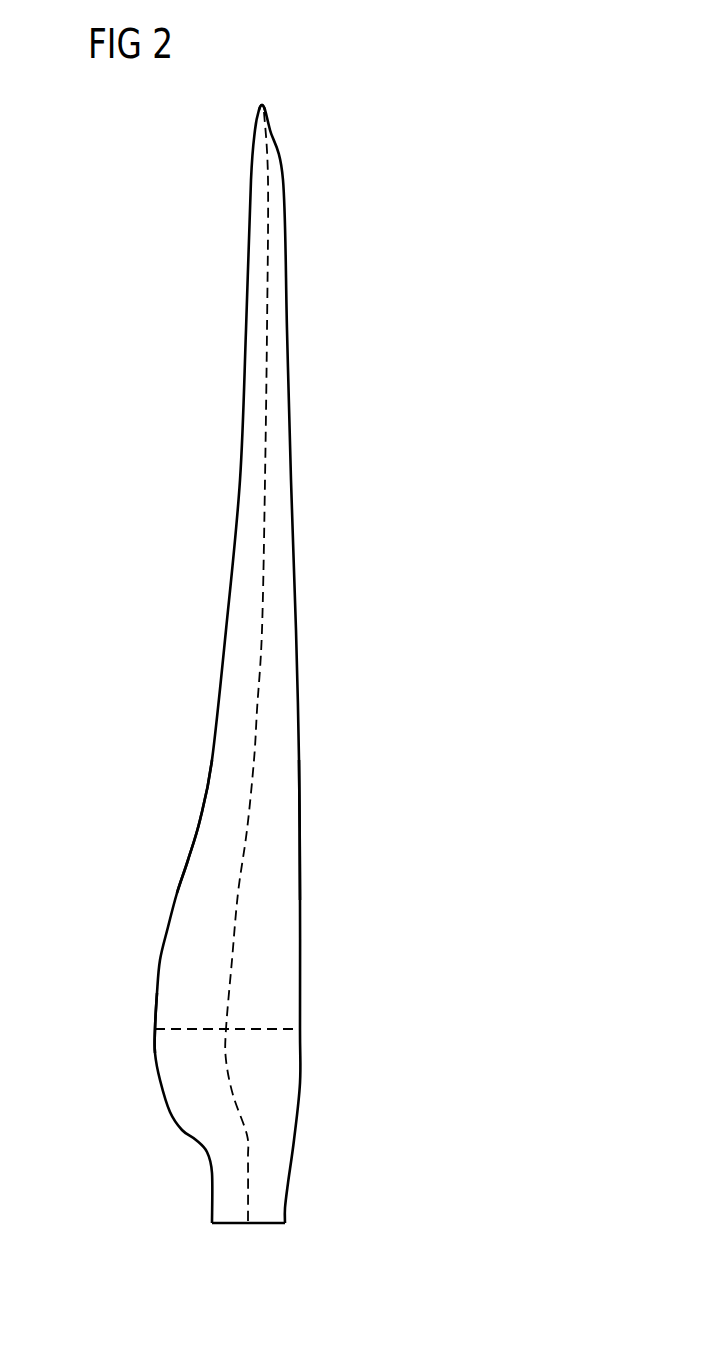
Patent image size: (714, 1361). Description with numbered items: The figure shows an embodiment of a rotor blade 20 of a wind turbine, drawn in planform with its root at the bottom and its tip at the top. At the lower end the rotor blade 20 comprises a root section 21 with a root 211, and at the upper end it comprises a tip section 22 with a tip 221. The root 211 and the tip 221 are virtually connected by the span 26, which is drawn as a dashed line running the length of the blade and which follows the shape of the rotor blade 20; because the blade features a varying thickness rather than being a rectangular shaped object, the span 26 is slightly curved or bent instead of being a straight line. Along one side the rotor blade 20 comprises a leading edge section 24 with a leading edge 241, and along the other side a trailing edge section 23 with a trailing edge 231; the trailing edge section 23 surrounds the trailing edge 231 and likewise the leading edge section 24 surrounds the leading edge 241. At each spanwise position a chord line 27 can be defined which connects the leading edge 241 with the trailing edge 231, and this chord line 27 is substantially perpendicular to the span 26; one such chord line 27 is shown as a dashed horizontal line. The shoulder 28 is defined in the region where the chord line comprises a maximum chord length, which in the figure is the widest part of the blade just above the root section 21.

The rotor blade 20 is at (386, 473).
The root section 21 is at (277, 1185).
The root 211 is at (237, 1224).
The tip section 22 is at (270, 142).
The tip 221 is at (262, 106).
The trailing edge section 23 is at (227, 734).
The trailing edge 231 is at (207, 786).
The leading edge section 24 is at (288, 768).
The leading edge 241 is at (302, 814).
The span 26 is at (257, 710).
The chord line 27 is at (267, 1028).
The shoulder 28 is at (155, 1030).